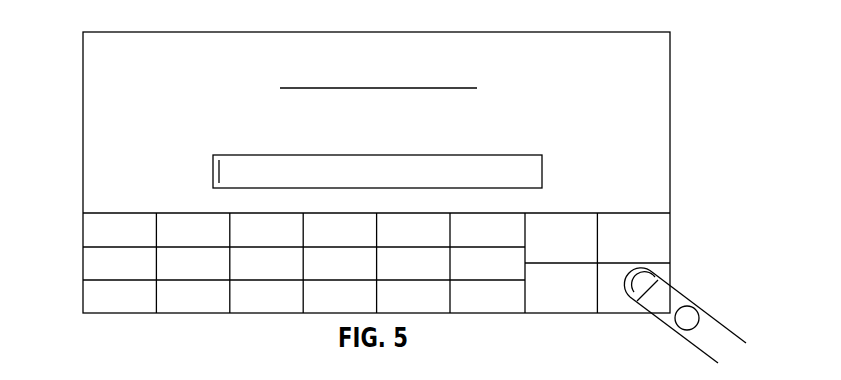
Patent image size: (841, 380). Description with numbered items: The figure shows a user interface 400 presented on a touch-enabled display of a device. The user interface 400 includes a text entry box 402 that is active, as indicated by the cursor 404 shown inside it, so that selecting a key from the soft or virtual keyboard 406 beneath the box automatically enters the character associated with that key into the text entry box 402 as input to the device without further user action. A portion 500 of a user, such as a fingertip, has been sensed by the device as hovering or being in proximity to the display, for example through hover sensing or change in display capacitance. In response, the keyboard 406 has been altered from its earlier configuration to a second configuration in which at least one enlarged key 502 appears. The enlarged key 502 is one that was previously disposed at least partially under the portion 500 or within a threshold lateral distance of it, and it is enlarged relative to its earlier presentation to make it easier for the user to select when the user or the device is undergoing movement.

The user interface 400 is at (678, 62).
The text entry box 402 is at (543, 169).
The cursor 404 is at (221, 167).
The keyboard 406 is at (83, 259).
The portion of a user 500 is at (702, 312).
The enlarged key 502 is at (667, 279).